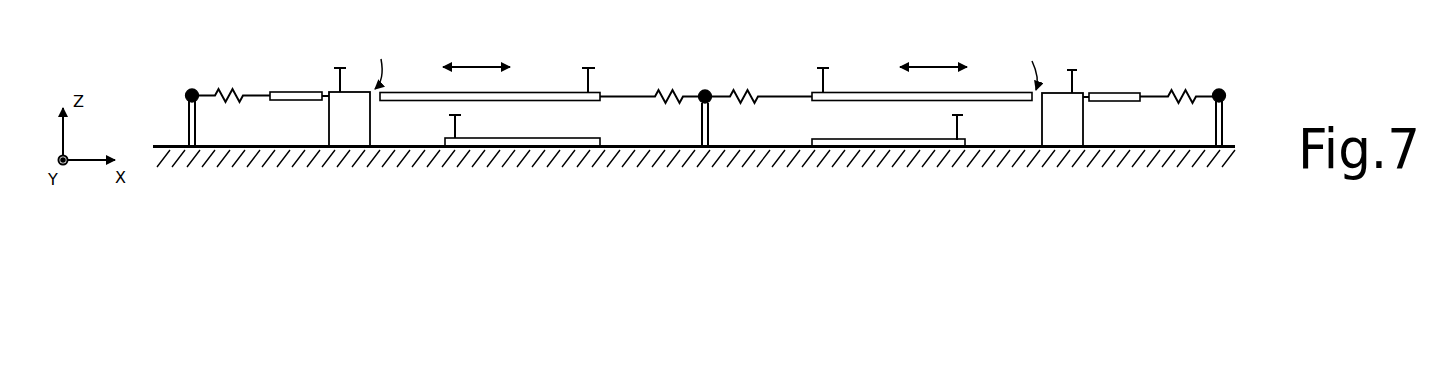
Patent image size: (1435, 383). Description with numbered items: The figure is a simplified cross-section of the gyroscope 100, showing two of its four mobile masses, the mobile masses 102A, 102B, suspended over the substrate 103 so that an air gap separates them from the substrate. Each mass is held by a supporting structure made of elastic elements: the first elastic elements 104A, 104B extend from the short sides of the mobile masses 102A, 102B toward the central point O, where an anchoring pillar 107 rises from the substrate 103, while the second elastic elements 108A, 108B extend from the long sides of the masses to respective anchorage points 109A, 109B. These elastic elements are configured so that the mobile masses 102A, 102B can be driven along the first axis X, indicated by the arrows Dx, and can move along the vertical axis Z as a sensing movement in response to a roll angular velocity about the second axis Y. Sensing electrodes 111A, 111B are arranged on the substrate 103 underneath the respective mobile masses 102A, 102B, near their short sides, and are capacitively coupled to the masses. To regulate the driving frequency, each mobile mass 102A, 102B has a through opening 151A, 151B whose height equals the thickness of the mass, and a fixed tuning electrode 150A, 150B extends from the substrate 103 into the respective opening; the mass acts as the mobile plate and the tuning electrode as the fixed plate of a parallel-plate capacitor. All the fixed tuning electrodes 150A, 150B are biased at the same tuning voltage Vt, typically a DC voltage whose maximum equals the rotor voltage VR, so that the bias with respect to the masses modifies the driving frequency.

The gyroscope 100 is at (156, 40).
The substrate 103 is at (1195, 150).
The anchorage point 109A is at (185, 96).
The anchorage point 109B is at (1225, 94).
The second elastic element 108A is at (225, 88).
The second elastic element 108B is at (1183, 88).
The fixed tuning electrode 150A is at (329, 123).
The fixed tuning electrode 150B is at (1065, 125).
The through opening 151A is at (392, 63).
The through opening 151B is at (1014, 64).
The mobile mass 102A is at (518, 98).
The mobile mass 102B is at (878, 93).
The sensing electrode 111A is at (508, 138).
The sensing electrode 111B is at (858, 140).
The first elastic element 104A is at (662, 92).
The first elastic element 104B is at (742, 92).
The central point O is at (705, 90).
The anchoring pillar 107 is at (702, 128).